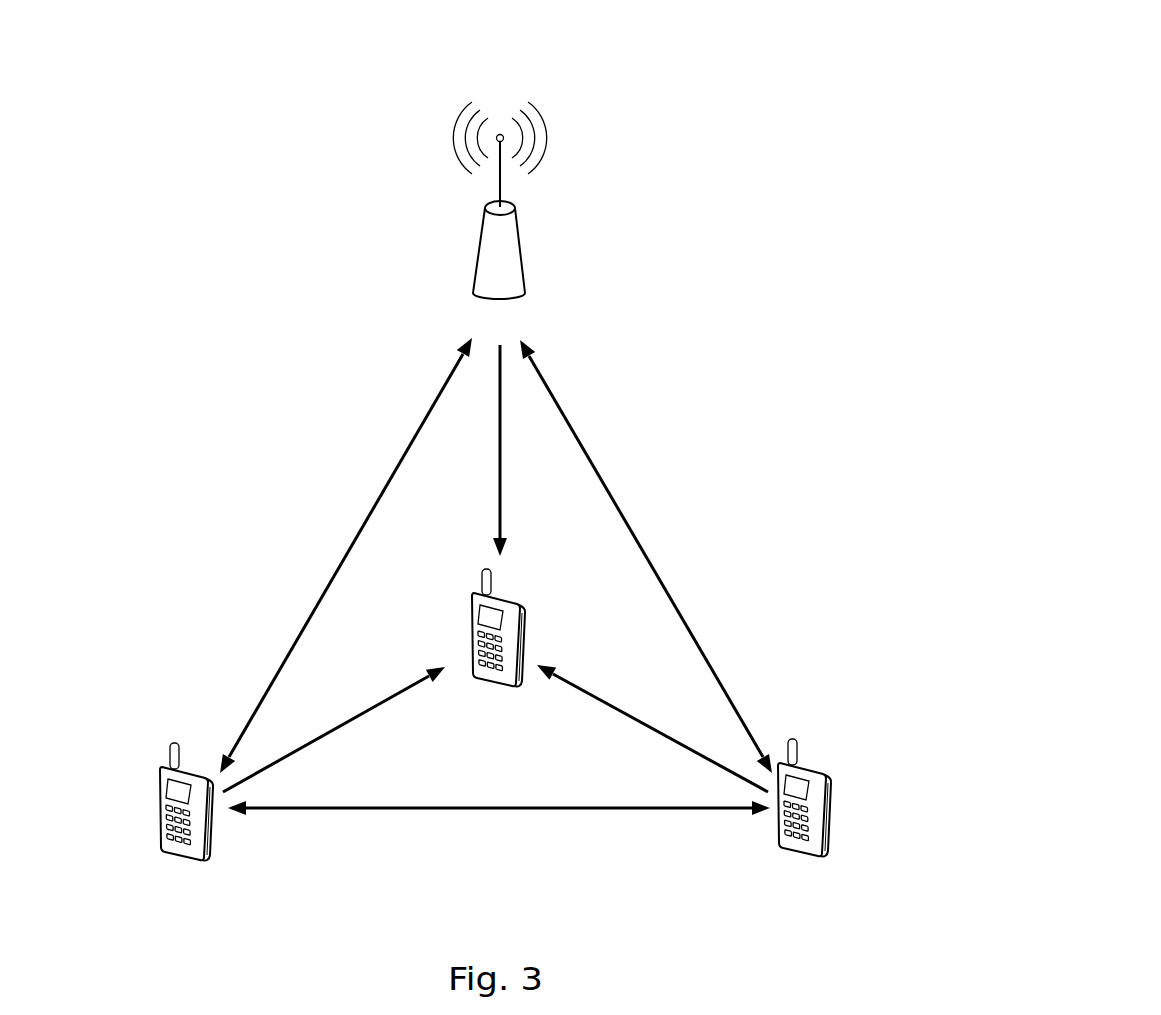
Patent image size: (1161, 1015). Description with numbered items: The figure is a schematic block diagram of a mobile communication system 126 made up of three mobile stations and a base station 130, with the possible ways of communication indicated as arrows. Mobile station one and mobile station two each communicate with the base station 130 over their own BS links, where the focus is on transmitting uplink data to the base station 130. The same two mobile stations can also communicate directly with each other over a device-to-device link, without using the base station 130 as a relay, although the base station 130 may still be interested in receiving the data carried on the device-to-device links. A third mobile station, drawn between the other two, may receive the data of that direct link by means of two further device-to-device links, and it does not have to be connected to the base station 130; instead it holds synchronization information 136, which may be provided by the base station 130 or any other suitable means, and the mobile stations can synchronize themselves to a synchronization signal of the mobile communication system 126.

The mobile communication system 126 is at (731, 122).
The base station 130 is at (523, 237).
The synchronization information 136 is at (498, 435).